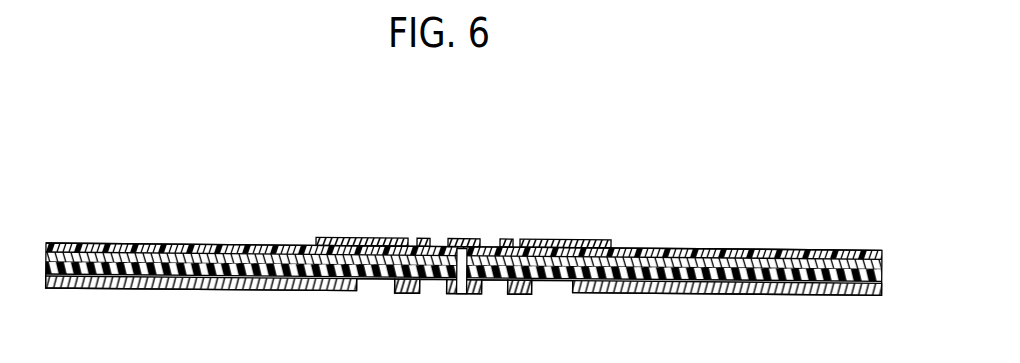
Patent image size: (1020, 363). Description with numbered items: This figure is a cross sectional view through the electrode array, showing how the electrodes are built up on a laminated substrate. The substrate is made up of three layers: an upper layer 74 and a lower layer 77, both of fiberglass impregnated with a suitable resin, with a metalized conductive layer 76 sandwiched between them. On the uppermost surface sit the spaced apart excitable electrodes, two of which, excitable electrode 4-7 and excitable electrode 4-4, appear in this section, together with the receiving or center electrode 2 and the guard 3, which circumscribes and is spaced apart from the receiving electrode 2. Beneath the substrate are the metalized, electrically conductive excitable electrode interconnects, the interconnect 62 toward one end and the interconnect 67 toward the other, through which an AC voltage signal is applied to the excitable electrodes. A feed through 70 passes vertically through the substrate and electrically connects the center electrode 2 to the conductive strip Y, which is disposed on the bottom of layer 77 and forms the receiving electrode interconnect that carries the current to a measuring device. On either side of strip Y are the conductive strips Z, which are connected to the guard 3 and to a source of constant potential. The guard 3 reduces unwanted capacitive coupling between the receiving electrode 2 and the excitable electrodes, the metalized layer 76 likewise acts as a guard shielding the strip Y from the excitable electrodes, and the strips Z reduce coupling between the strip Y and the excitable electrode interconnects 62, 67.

The receiving or center electrode 2 is at (468, 236).
The guard 3 is at (427, 235).
The excitable electrode 4-4 is at (575, 235).
The excitable electrode 4-7 is at (372, 235).
The excitable electrode interconnect 62 is at (183, 289).
The excitable electrode interconnect 67 is at (783, 297).
The feed through 70 is at (463, 293).
The substrate layer 74 is at (883, 251).
The metalized conductive layer 76 is at (884, 261).
The substrate layer 77 is at (884, 282).
The conductive strip (receiving electrode interconnect) y is at (478, 294).
The conductive strip z is at (401, 293).